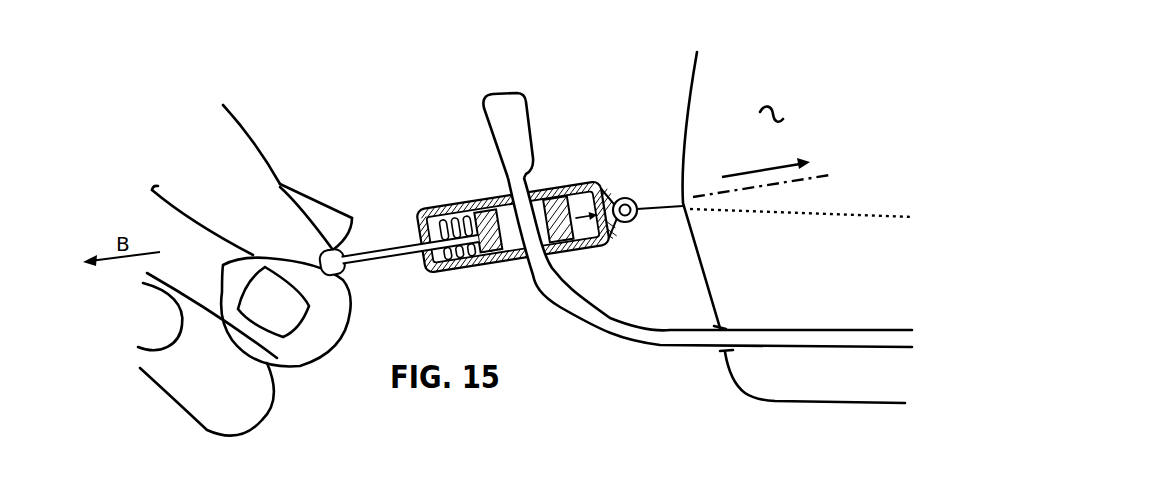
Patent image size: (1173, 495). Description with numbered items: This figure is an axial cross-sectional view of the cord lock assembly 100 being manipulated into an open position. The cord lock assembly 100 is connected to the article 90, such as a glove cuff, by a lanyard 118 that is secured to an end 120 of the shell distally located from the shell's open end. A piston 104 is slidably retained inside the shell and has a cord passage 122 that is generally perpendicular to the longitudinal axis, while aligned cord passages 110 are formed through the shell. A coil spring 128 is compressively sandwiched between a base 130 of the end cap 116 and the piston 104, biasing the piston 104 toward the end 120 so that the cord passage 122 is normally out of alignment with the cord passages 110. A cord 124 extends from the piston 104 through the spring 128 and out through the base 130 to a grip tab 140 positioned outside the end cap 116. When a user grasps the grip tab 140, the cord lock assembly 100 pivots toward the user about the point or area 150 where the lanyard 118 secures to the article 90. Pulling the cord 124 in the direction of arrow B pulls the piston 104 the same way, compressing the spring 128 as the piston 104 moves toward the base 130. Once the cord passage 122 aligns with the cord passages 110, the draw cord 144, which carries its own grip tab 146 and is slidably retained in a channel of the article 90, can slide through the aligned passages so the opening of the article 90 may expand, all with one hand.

The article 90 is at (735, 80).
The cord lock assembly 100 is at (500, 229).
The piston 104 is at (498, 258).
The cord passages 110 is at (531, 192).
The end cap 116 is at (417, 258).
The lanyard 118 is at (662, 206).
The end of the shell 120 is at (629, 224).
The cord passage 122 is at (556, 266).
The cord 124 is at (390, 243).
The coil spring 128 is at (453, 220).
The base of the end cap 130 is at (427, 230).
The grip tab 140 is at (320, 250).
The draw cord 144 is at (635, 334).
The grip tab 146 is at (507, 108).
The point or area 150 is at (684, 200).